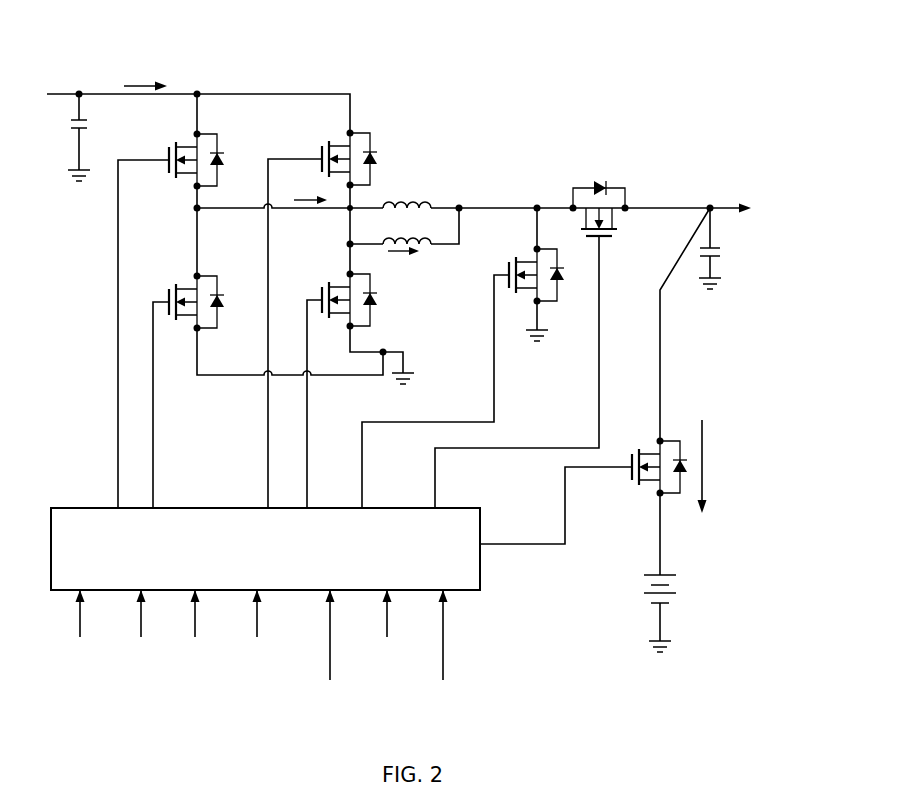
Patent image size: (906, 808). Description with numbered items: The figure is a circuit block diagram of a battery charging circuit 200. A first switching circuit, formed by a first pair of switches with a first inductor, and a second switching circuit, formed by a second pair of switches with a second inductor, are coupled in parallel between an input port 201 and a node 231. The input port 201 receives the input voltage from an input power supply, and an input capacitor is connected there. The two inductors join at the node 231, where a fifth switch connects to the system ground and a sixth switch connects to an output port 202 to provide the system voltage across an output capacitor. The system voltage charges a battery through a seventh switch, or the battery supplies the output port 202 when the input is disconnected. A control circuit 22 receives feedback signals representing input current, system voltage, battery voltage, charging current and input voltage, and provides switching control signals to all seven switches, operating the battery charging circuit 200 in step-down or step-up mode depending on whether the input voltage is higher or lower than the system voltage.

The battery charging circuit 200 is at (737, 34).
The input port 201 is at (79, 92).
The output port 202 is at (710, 206).
The node 231 is at (459, 205).
The control circuit 22 is at (80, 507).